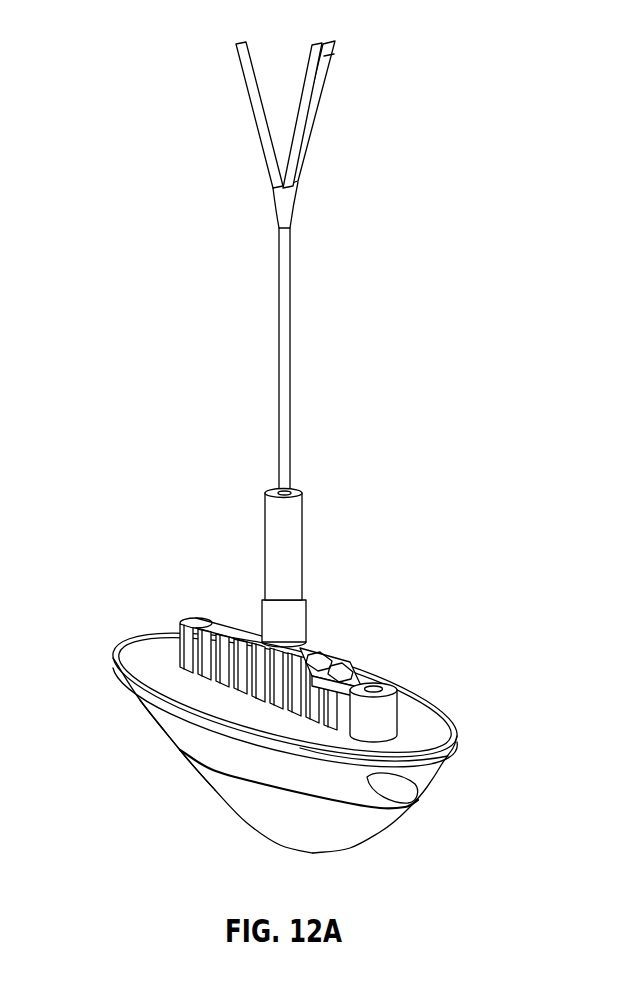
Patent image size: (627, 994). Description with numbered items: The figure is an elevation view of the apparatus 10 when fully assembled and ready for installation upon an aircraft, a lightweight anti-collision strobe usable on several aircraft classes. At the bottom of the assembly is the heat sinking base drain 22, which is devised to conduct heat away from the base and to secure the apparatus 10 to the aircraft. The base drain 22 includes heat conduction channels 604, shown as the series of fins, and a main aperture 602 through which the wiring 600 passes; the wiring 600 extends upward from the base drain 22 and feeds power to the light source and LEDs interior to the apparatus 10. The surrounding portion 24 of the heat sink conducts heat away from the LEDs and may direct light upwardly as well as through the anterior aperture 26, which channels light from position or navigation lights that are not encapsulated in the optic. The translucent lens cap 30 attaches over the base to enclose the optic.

The apparatus 10 is at (301, 449).
The wiring 600 is at (291, 353).
The main aperture 602 is at (311, 635).
The heat conduction channels 604 is at (387, 654).
The base drain 22 is at (425, 729).
The surrounding portion of heat sink 24 is at (166, 712).
The anterior aperture 26 is at (446, 801).
The translucent lens cap 30 is at (267, 818).